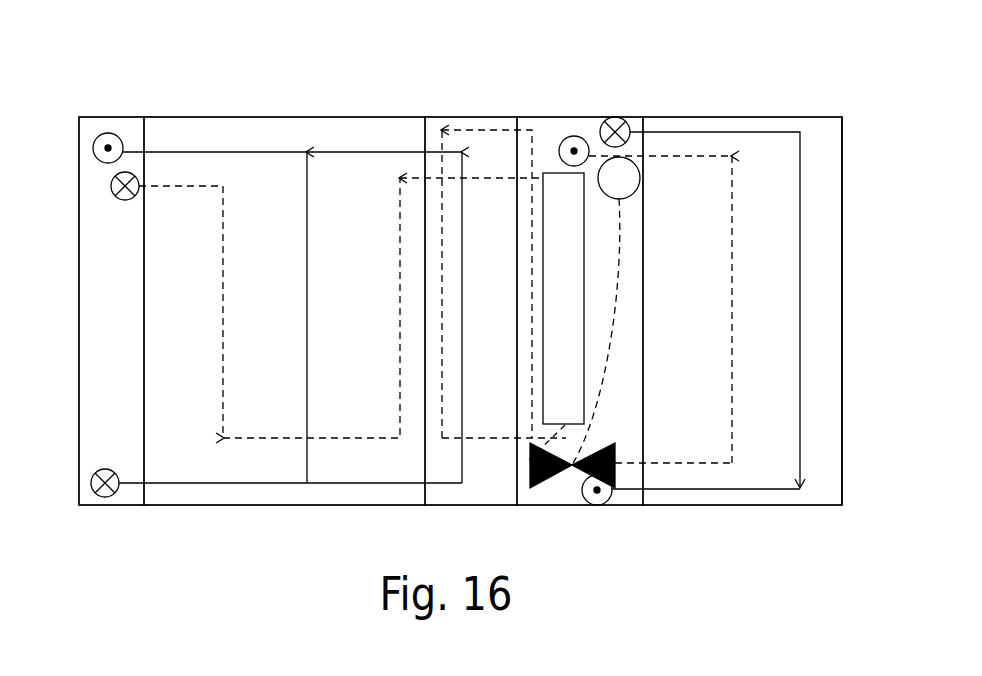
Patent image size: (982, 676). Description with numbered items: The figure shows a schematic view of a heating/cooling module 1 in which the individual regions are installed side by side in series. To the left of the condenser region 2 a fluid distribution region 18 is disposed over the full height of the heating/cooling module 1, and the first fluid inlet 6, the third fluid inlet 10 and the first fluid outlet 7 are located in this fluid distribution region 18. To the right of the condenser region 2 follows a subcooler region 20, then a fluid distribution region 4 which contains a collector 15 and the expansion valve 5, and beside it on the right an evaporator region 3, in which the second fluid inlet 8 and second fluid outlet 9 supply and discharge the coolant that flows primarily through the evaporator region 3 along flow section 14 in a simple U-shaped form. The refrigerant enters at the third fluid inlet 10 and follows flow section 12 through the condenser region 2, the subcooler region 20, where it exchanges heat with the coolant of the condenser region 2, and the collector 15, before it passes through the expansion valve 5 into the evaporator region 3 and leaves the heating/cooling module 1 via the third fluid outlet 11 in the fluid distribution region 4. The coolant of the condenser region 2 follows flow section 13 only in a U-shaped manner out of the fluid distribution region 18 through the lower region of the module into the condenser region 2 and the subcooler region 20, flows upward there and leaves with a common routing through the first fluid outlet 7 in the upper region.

The heating/cooling module 1 is at (471, 84).
The condenser region 2 is at (262, 117).
The evaporator region 3 is at (765, 117).
The fluid distribution region 4 is at (552, 117).
The expansion valve 5 is at (572, 468).
The first fluid inlet 6 is at (106, 497).
The first fluid outlet 7 is at (108, 117).
The second fluid inlet 8 is at (618, 117).
The second fluid outlet 9 is at (597, 497).
The third fluid inlet 10 is at (110, 188).
The third fluid outlet 11 is at (576, 136).
The flow section 12 is at (223, 206).
The flow section 13 is at (253, 484).
The flow section 14 is at (838, 302).
The collector 15 is at (563, 200).
The fluid distribution region 18 is at (115, 345).
The subcooler region 20 is at (445, 117).